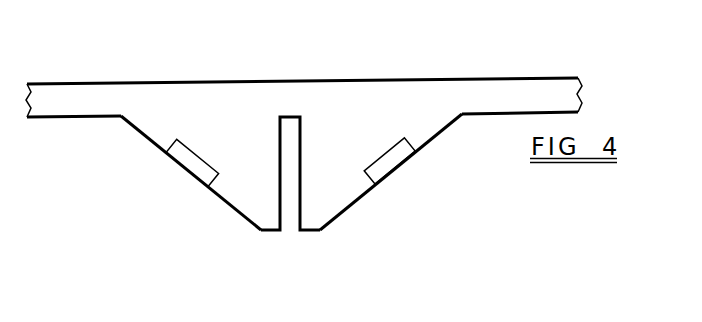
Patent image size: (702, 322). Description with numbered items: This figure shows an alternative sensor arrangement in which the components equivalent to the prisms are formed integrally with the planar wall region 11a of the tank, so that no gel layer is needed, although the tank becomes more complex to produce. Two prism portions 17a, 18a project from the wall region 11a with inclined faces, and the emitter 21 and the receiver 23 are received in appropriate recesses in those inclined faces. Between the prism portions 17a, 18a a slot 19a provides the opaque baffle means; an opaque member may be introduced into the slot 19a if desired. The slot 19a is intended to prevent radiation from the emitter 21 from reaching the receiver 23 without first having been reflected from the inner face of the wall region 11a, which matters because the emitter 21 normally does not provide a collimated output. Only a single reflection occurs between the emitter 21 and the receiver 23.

The wall region 11a is at (70, 96).
The prism portion 18a is at (234, 190).
The slot 19a is at (290, 165).
The prism portion 17a is at (343, 182).
The receiver 23 is at (184, 163).
The emitter 21 is at (395, 153).